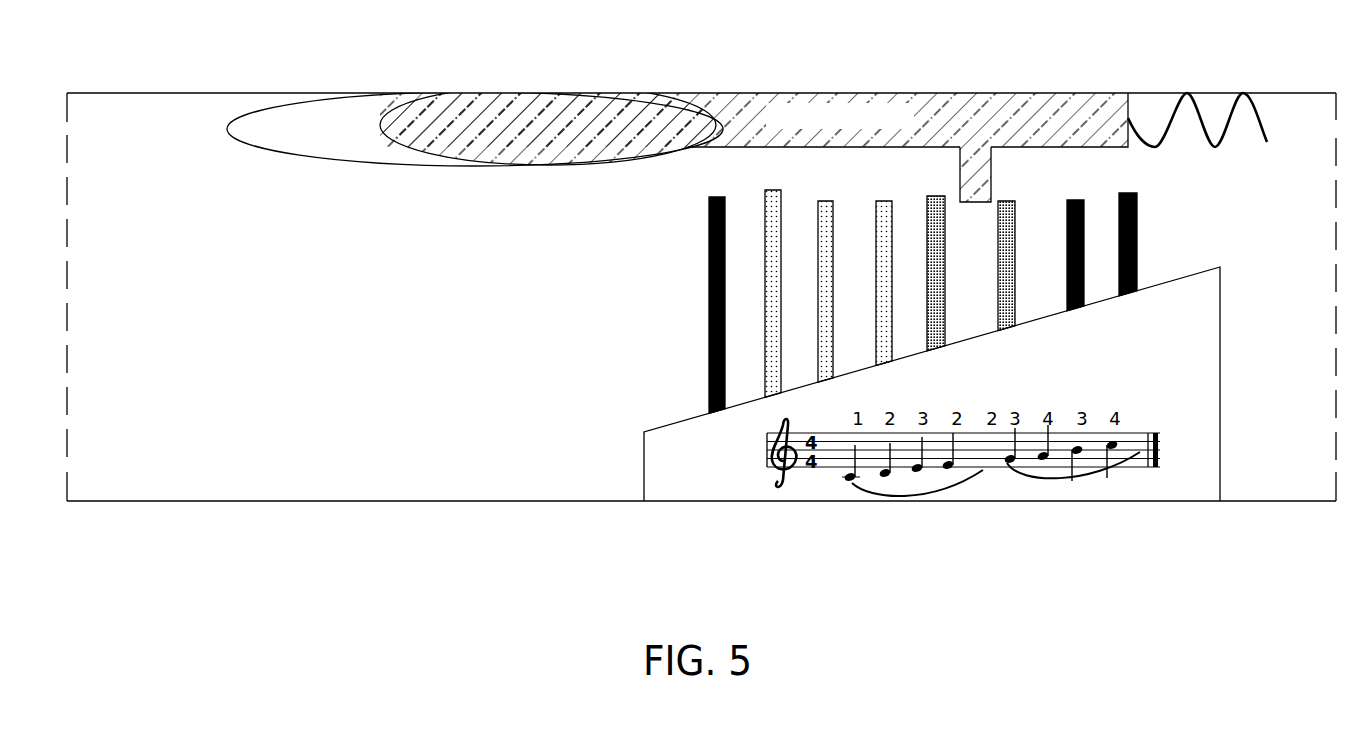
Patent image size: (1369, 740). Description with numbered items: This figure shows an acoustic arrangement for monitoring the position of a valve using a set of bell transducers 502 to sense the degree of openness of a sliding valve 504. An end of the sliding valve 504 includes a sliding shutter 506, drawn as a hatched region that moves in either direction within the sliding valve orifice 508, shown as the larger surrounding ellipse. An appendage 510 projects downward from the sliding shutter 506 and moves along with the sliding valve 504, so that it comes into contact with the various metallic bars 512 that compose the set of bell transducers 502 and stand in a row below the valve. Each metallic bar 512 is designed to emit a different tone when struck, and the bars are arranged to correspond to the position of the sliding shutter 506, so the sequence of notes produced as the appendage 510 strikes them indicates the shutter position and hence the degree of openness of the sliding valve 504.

The set of bell transducers 502 is at (648, 287).
The sliding valve 504 is at (560, 76).
The sliding shutter 506 is at (413, 147).
The sliding valve orifice 508 is at (316, 128).
The appendage 510 is at (992, 178).
The metallic bar 512 is at (708, 351).